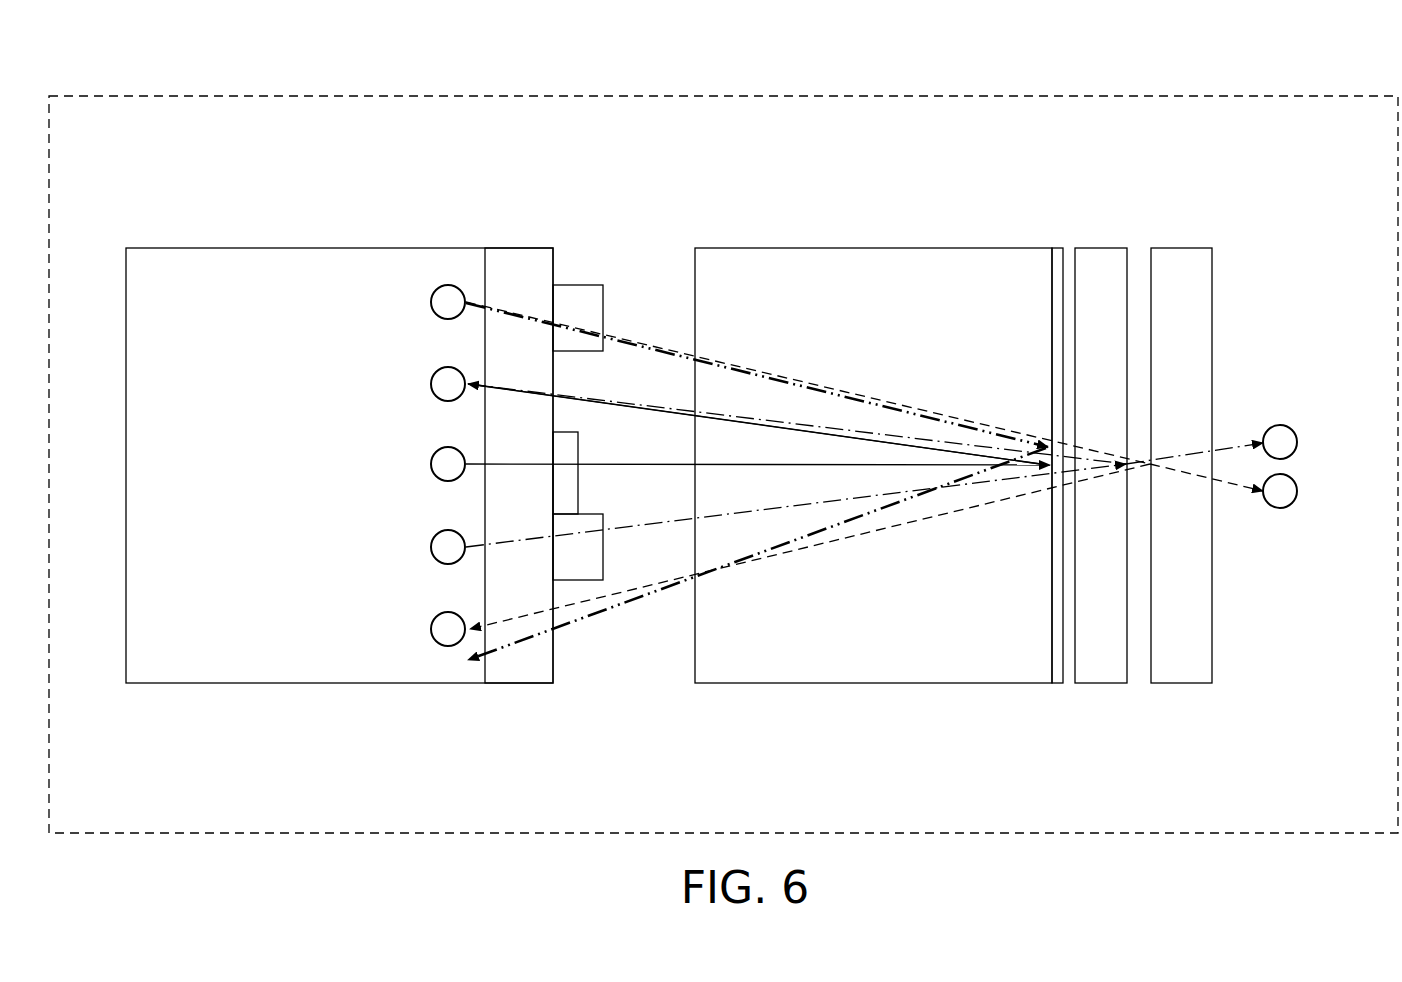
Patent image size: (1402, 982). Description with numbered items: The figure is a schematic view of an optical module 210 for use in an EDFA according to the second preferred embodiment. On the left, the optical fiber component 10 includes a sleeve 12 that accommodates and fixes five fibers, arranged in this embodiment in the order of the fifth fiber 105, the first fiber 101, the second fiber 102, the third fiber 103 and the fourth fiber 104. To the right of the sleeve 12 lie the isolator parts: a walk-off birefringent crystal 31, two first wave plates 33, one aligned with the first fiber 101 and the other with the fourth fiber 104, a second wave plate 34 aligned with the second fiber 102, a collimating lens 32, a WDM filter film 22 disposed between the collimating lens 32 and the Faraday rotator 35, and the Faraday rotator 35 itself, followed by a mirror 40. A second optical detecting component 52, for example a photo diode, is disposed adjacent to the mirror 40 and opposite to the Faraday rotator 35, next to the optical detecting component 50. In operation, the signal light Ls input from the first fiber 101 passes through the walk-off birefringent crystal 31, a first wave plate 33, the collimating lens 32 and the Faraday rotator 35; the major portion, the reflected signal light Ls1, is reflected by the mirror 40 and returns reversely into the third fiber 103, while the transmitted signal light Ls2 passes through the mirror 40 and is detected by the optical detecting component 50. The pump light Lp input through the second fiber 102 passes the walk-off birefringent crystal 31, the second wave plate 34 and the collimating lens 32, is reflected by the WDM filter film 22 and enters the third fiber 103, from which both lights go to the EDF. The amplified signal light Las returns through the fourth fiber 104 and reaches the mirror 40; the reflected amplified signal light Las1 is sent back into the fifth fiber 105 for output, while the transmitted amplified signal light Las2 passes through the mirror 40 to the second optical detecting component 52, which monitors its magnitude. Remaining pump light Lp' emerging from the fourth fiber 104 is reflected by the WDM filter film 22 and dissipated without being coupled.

The optical module 210 is at (1350, 95).
The optical fiber component 10 is at (269, 208).
The sleeve 12 is at (379, 248).
The walk-off birefringent crystal 31 is at (520, 248).
The first wave plate 33 is at (574, 285).
The second wave plate 34 is at (578, 440).
The collimating lens 32 is at (1005, 248).
The WDM filter film 22 is at (1059, 248).
The Faraday rotator 35 is at (1102, 248).
The mirror 40 is at (1182, 248).
The optical detecting component 50 is at (1280, 425).
The second optical detecting component 52 is at (1280, 510).
The first fiber 101 is at (431, 547).
The second fiber 102 is at (431, 464).
The third fiber 103 is at (431, 384).
The fourth fiber 104 is at (431, 302).
The fifth fiber 105 is at (431, 629).
The amplified signal light Las is at (746, 360).
The reflected amplified signal light Las1 is at (933, 516).
The transmitted amplified signal light Las2 is at (1173, 472).
The pump light Lp is at (758, 466).
The remaining pump light Lp' is at (757, 466).
The signal light Ls is at (776, 510).
The reflected signal light Ls1 is at (894, 437).
The transmitted signal light Ls2 is at (1222, 442).